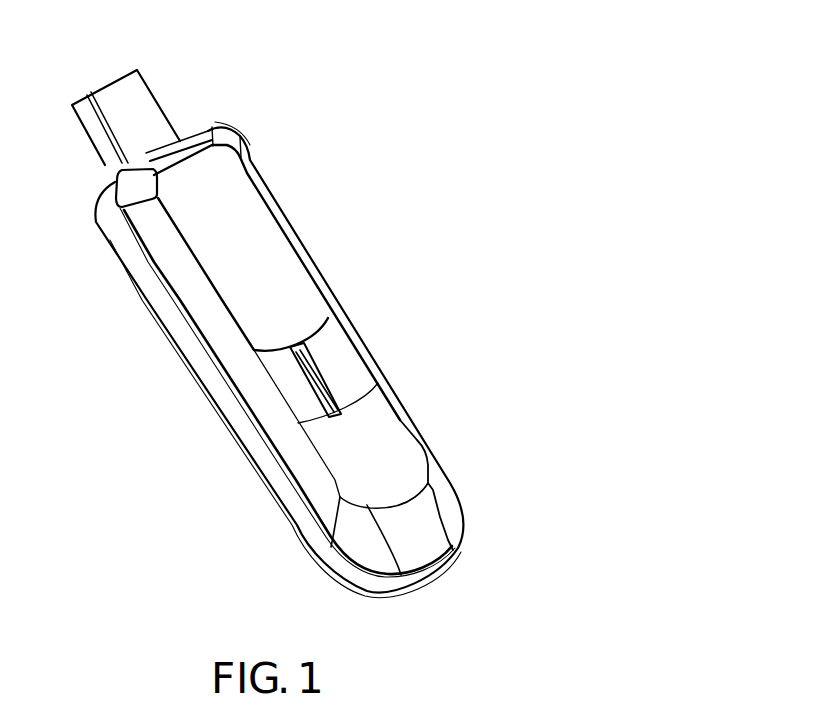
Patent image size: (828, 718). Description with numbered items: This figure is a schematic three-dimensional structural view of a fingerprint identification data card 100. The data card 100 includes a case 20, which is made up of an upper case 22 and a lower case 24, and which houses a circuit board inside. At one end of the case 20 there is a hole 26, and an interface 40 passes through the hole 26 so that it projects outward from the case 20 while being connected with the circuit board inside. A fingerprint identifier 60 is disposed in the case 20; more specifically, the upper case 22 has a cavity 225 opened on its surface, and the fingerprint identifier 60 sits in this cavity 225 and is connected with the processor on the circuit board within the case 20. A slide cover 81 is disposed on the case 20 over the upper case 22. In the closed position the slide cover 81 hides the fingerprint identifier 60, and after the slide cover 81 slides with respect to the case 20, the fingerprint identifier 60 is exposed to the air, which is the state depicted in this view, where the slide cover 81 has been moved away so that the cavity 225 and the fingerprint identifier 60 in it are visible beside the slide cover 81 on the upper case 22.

The data card 100 is at (510, 27).
The case 20 is at (413, 530).
The upper case 22 is at (438, 485).
The lower case 24 is at (192, 357).
The hole 26 is at (147, 153).
The interface 40 is at (123, 98).
The fingerprint identifier 60 is at (320, 362).
The slide cover 81 is at (226, 220).
The cavity 225 is at (300, 342).